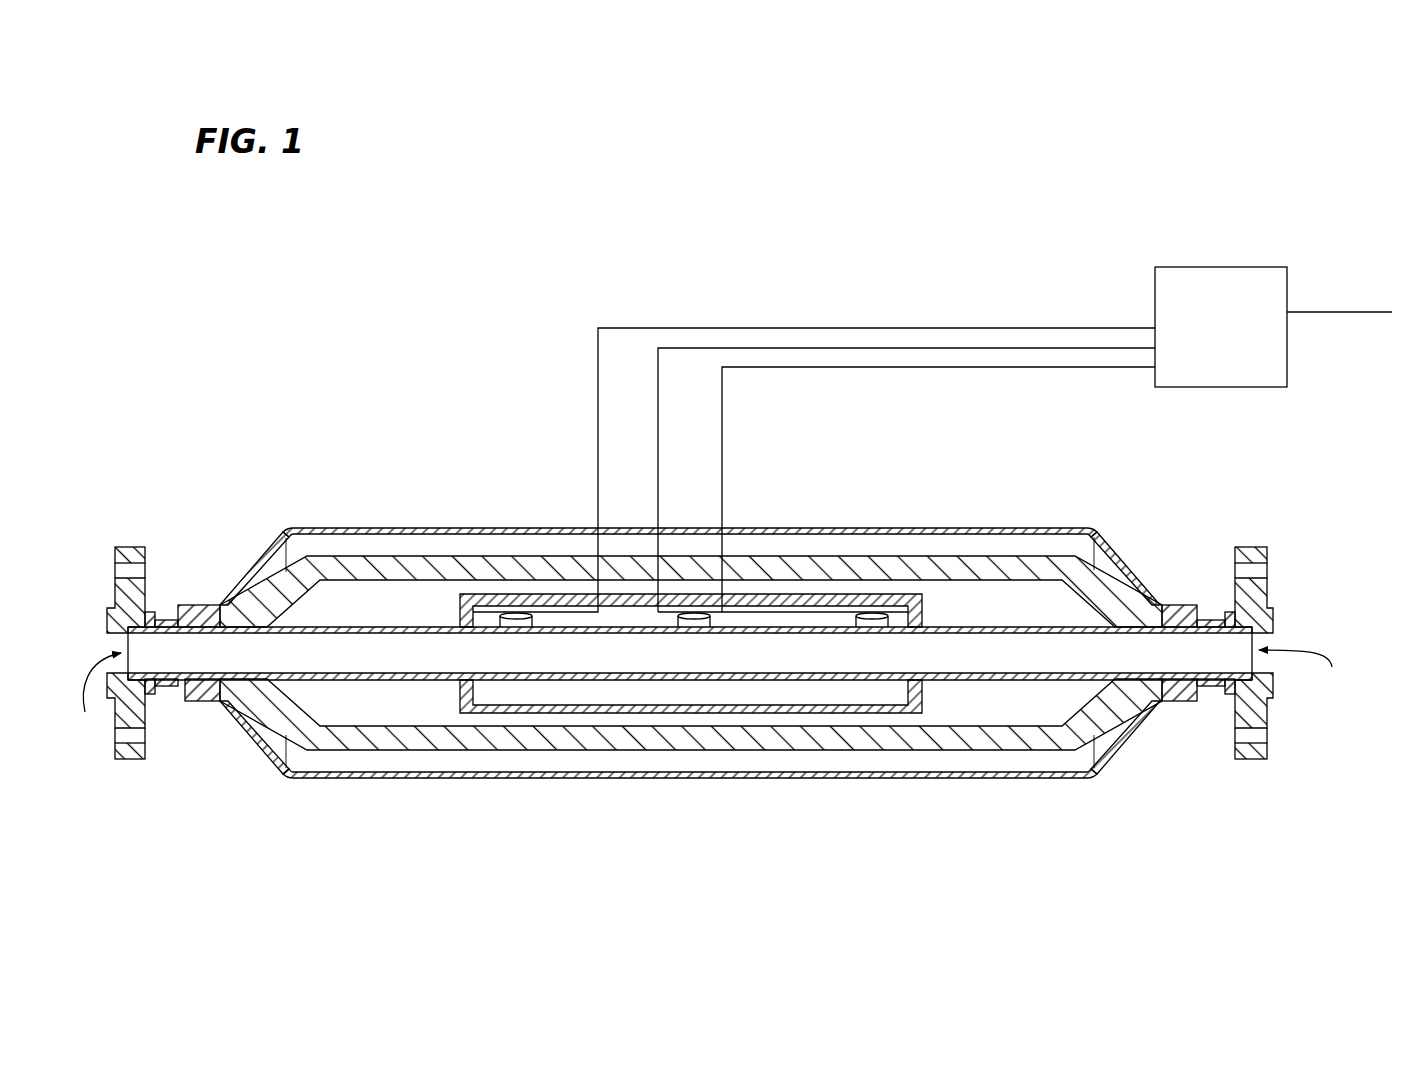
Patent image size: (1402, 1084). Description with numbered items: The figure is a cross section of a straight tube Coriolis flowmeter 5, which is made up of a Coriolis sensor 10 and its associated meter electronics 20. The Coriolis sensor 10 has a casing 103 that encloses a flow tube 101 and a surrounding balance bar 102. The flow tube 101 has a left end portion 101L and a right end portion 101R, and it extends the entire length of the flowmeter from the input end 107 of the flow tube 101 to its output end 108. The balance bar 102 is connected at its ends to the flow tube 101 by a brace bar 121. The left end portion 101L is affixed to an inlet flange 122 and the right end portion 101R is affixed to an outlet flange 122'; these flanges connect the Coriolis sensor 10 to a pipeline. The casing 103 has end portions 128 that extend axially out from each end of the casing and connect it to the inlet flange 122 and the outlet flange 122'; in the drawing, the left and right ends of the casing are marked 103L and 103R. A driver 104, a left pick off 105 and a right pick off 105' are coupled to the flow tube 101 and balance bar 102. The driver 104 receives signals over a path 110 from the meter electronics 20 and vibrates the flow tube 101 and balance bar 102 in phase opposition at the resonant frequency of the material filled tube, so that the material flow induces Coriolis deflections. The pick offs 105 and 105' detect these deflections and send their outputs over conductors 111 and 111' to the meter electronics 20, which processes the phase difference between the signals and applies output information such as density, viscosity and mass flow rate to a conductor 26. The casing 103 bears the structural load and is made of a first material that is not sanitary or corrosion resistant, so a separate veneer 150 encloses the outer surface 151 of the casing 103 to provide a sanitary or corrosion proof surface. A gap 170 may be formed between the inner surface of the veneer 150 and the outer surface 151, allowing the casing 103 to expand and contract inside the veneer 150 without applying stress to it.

The straight tube Coriolis flowmeter 5 is at (289, 279).
The Coriolis sensor 10 is at (537, 461).
The meter electronics 20 is at (1209, 361).
The conductor 26 is at (1347, 312).
The flow tube 101 is at (1023, 627).
The left end portion of flow tube 101L is at (290, 683).
The right end portion of flow tube 101R is at (1097, 683).
The balance bar 102 is at (927, 585).
The casing 103 is at (317, 608).
The left case end 103L is at (242, 583).
The right case end 103R is at (1133, 570).
The driver 104 is at (698, 627).
The left pick off 105 is at (536, 639).
The right pick off 105' is at (845, 640).
The input end 107 is at (92, 696).
The output end 108 is at (1304, 673).
The path 110 is at (893, 349).
The conductor 111 is at (814, 435).
The conductor 111' is at (906, 489).
The brace bar 121 is at (460, 690).
The inlet flange 122 is at (121, 618).
The outlet flange 122' is at (1255, 615).
The end portions of casing 128 is at (262, 578).
The veneer 150 is at (390, 528).
The outer surface of casing 151 is at (467, 556).
The gap 170 is at (900, 545).